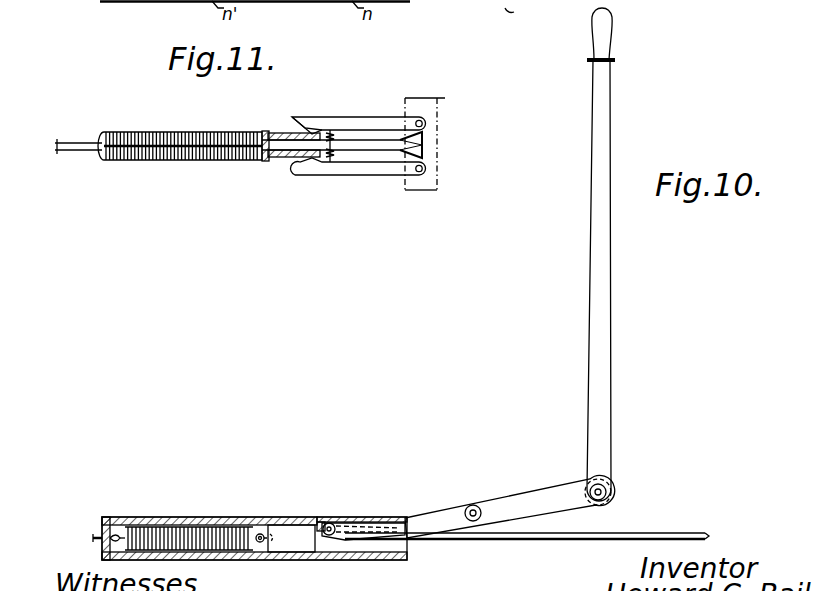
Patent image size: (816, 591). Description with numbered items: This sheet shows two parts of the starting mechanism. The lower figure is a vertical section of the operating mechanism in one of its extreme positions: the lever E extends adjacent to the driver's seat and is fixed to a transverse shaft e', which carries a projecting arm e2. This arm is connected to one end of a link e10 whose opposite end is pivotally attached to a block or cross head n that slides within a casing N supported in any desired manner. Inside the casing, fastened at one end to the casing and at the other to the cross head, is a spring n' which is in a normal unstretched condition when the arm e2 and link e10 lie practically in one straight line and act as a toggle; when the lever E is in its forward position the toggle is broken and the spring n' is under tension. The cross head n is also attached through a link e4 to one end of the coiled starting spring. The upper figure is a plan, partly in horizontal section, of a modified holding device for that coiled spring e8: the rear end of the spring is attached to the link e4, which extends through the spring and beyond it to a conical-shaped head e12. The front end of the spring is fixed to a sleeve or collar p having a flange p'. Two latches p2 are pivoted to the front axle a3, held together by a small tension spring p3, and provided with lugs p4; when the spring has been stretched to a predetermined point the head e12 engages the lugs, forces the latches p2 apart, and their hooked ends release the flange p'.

In FIG. 10, the lever E is at (593, 146).
In FIG. 10, the transverse shaft e' is at (610, 494).
In FIG. 10, the projecting arm e2 is at (522, 498).
In FIG. 11, the link e4 is at (84, 150).
In FIG. 10, the link e4 is at (575, 540).
In FIG. 11, the spring e8 is at (190, 160).
In FIG. 10, the link e10 is at (404, 519).
In FIG. 11, the conical-shaped head e12 is at (422, 150).
In FIG. 10, the casing N is at (206, 515).
In FIG. 10, the block or cross head n is at (289, 522).
In FIG. 10, the spring n' is at (187, 555).
In FIG. 11, the sleeve or collar p is at (291, 160).
In FIG. 11, the flange p' is at (312, 108).
In FIG. 11, the latches p2 is at (388, 118).
In FIG. 11, the tension spring p3 is at (333, 162).
In FIG. 11, the lugs p4 is at (364, 130).
In FIG. 11, the front axle a3 is at (433, 142).